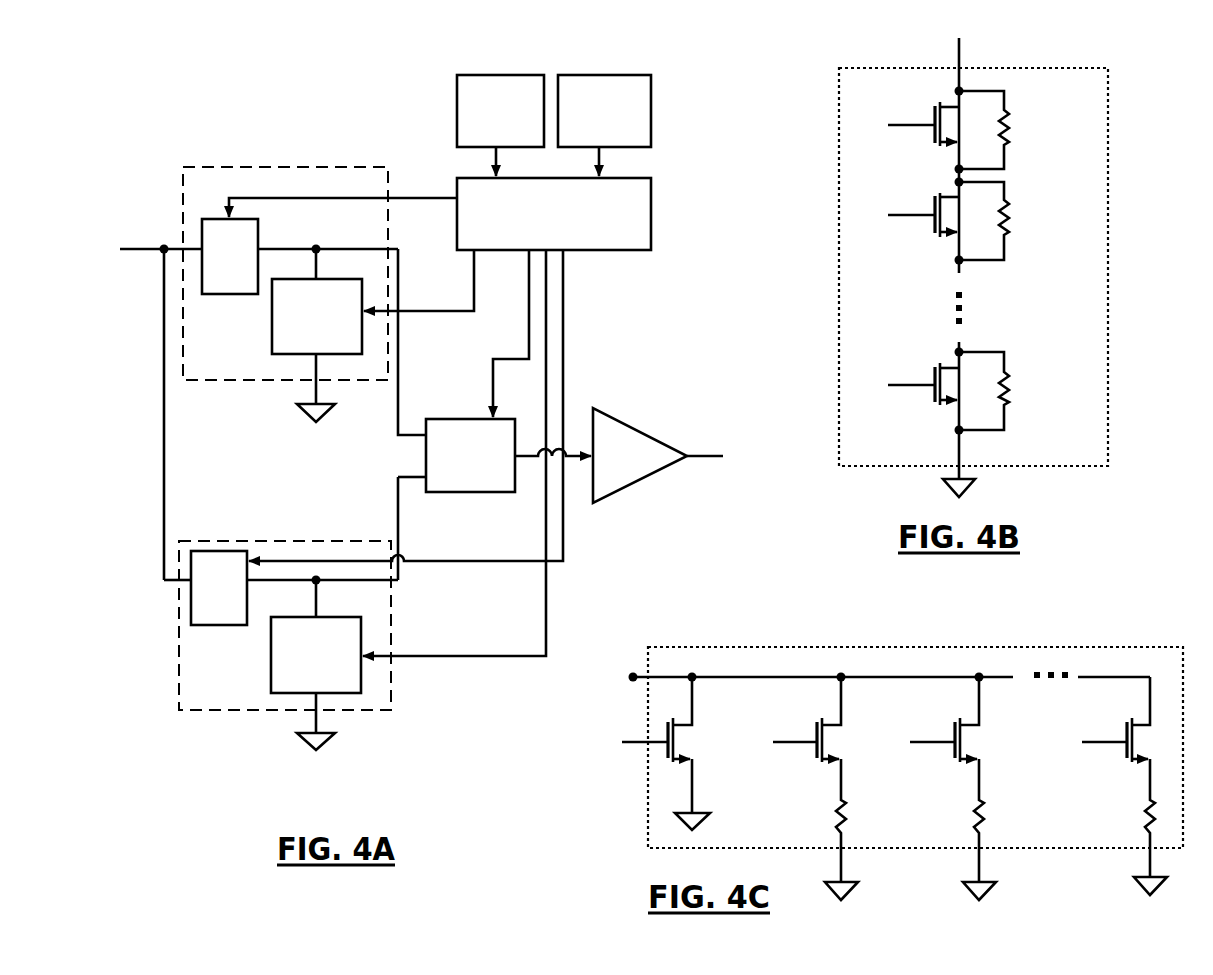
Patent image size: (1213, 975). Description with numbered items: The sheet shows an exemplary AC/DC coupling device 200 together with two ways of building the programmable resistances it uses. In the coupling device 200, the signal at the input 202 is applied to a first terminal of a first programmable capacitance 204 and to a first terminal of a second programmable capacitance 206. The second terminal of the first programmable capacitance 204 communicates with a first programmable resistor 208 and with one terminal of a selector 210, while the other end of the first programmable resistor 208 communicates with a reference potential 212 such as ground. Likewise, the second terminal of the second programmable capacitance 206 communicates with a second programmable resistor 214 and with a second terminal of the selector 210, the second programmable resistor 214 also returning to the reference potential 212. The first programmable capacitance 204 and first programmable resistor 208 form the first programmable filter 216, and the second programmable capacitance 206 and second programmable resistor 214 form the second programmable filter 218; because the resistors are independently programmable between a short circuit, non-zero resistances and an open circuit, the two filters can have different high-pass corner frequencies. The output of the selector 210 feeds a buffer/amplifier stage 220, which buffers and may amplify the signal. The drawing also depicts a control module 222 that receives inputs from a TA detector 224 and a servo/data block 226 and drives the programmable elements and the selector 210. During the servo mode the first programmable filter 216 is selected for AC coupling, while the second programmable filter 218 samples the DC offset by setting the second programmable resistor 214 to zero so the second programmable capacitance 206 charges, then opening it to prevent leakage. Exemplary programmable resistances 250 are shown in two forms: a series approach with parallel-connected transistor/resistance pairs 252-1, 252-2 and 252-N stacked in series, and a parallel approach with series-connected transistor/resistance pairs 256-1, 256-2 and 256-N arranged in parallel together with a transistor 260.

In FIG. 4A, the coupling device 200 is at (142, 120).
In FIG. 4A, the input 202 is at (133, 252).
In FIG. 4A, the first programmable capacitance 204 is at (258, 236).
In FIG. 4A, the second programmable capacitance 206 is at (222, 551).
In FIG. 4A, the first programmable resistor 208 is at (272, 312).
In FIG. 4A, the selector 210 is at (480, 492).
In FIG. 4A, the reference potential 212 is at (297, 411).
In FIG. 4A, the second programmable resistor 214 is at (271, 650).
In FIG. 4A, the first programmable filter 216 is at (250, 166).
In FIG. 4A, the second programmable filter 218 is at (294, 540).
In FIG. 4A, the buffer/amplifier stage 220 is at (620, 425).
In FIG. 4A, the control module 222 is at (651, 213).
In FIG. 4A, the TA detector 224 is at (504, 75).
In FIG. 4A, the servo/data module 226 is at (609, 75).
In FIG. 4B, the programmable resistance 250 is at (1046, 68).
In FIG. 4C, the programmable resistance 250 is at (1046, 647).
In FIG. 4B, the transistor/resistance pair 252-1 is at (905, 149).
In FIG. 4B, the transistor/resistance pair 252-2 is at (898, 247).
In FIG. 4B, the transistor/resistance pair 252-N is at (898, 407).
In FIG. 4C, the transistor/resistance pair 256-1 is at (849, 744).
In FIG. 4C, the transistor/resistance pair 256-2 is at (986, 744).
In FIG. 4C, the transistor/resistance pair 256-N is at (1112, 767).
In FIG. 4C, the transistor 260 is at (700, 744).